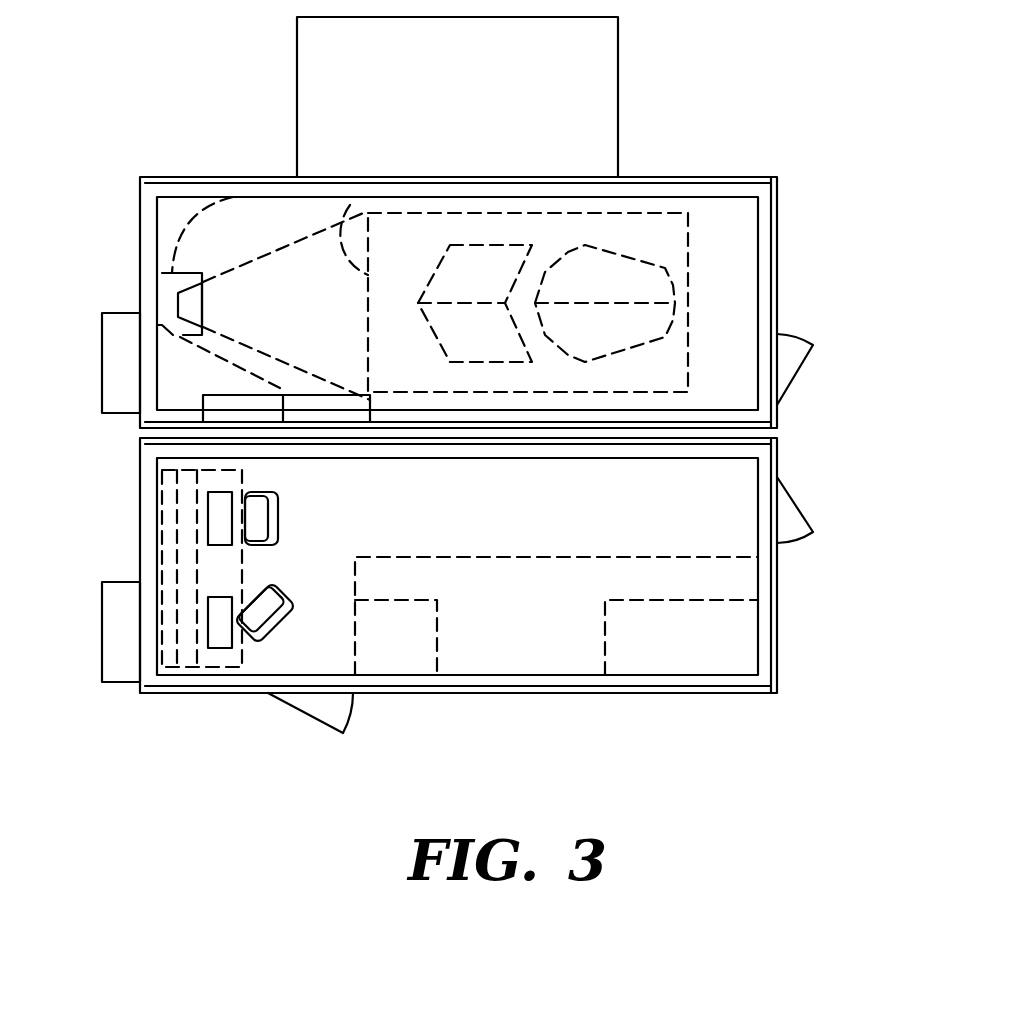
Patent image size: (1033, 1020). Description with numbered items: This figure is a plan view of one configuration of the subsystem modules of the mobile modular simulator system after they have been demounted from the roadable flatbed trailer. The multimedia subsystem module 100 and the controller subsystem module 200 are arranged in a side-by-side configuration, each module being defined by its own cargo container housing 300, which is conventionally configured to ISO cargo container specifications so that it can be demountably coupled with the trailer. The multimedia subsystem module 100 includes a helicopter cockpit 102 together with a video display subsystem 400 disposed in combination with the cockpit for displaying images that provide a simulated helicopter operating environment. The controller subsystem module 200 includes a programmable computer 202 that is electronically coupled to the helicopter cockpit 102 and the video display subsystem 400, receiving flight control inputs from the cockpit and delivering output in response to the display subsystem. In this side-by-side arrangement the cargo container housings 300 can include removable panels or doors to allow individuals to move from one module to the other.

The multimedia subsystem module 100 is at (168, 175).
The helicopter cockpit 102 is at (635, 300).
The controller subsystem module 200 is at (233, 695).
The programmable computer 202 is at (643, 637).
The cargo container housing 300 is at (777, 243).
The video display subsystem 400 is at (233, 197).